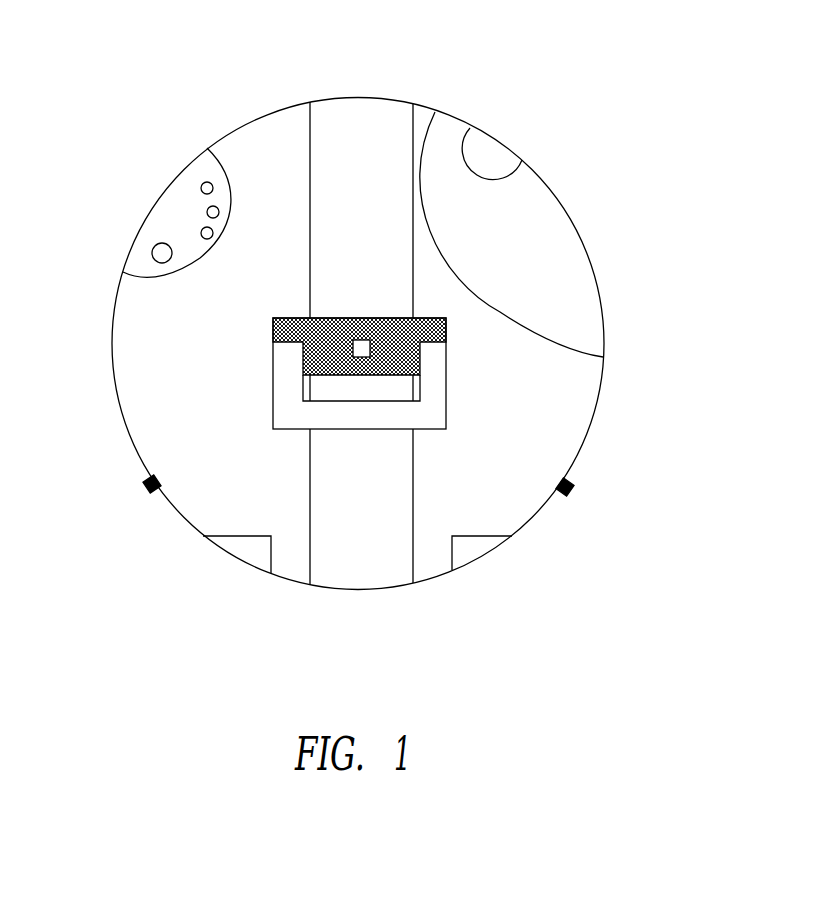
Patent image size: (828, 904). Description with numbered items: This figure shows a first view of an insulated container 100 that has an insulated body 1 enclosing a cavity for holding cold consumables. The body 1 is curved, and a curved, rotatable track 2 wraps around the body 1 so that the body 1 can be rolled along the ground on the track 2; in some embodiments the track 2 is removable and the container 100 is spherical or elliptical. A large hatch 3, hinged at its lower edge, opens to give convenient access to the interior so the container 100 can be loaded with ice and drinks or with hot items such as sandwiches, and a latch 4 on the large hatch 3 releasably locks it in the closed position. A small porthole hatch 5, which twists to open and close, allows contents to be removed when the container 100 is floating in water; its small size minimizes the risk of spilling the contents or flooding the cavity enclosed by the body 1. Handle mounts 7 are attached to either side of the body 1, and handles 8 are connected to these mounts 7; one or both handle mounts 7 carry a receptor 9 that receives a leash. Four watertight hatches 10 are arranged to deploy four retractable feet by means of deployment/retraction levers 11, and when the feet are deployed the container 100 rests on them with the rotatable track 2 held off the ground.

The container 100 is at (358, 299).
The insulated body 1 is at (258, 138).
The rotatable track 2 is at (385, 572).
The large hatch 3 is at (535, 213).
The latch 4 is at (486, 147).
The small porthole hatch 5 is at (173, 220).
The handle mount 7 is at (445, 318).
The handle 8 is at (432, 412).
The receptor 9 is at (360, 350).
The watertight hatch 10 is at (250, 552).
The deployment/retraction lever 11 is at (140, 478).